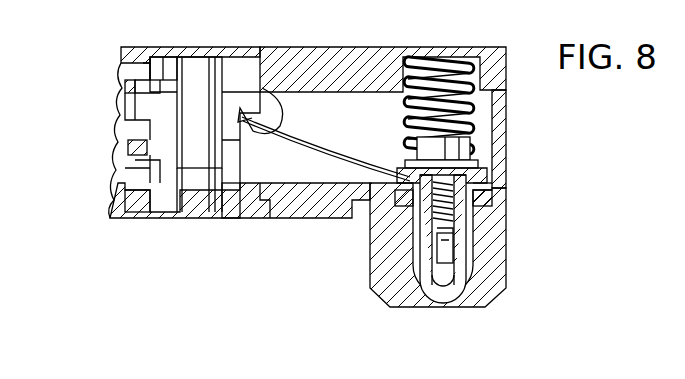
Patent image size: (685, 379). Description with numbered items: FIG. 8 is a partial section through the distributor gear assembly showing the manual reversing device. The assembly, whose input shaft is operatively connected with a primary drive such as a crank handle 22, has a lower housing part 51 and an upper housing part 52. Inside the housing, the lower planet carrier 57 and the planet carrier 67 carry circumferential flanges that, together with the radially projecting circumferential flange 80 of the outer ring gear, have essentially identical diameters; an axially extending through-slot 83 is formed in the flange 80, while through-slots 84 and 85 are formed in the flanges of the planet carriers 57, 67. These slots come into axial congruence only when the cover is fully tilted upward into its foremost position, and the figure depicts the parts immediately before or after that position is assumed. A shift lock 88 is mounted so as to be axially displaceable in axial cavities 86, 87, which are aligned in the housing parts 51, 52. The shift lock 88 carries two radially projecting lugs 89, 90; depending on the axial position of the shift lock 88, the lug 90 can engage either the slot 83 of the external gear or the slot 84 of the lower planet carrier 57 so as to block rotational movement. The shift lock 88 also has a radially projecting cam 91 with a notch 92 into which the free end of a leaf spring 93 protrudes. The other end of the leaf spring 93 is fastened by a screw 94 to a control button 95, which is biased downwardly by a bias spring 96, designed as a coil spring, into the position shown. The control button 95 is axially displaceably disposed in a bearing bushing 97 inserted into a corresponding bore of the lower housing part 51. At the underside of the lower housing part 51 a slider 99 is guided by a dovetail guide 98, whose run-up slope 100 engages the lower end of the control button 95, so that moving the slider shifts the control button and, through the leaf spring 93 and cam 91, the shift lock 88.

The radially projecting lug 89 is at (163, 68).
The axial cavity 87 is at (233, 74).
The notch 92 is at (268, 97).
The crank handle 22 is at (305, 3).
The upper housing part 52 is at (347, 77).
The bias spring 96 is at (414, 60).
The screw 94 is at (466, 144).
The bearing bushing 97 is at (470, 190).
The dovetail guide 98 is at (478, 203).
The control button 95 is at (462, 247).
The run-up slope 100 is at (468, 283).
The slider 99 is at (385, 270).
The lower housing part 51 is at (340, 215).
The lower planet carrier 57 is at (110, 218).
The through-slot 84 is at (130, 213).
The shift lock 88 is at (179, 214).
The axial cavity 86 is at (243, 213).
The radially projecting cam 91 is at (268, 215).
The leaf spring 93 is at (313, 152).
The through-slot 85 is at (150, 77).
The planet carrier 67 is at (133, 88).
The radially projecting lug 90 is at (157, 123).
The circumferential flange 80 is at (127, 152).
The through-slot 83 is at (128, 167).